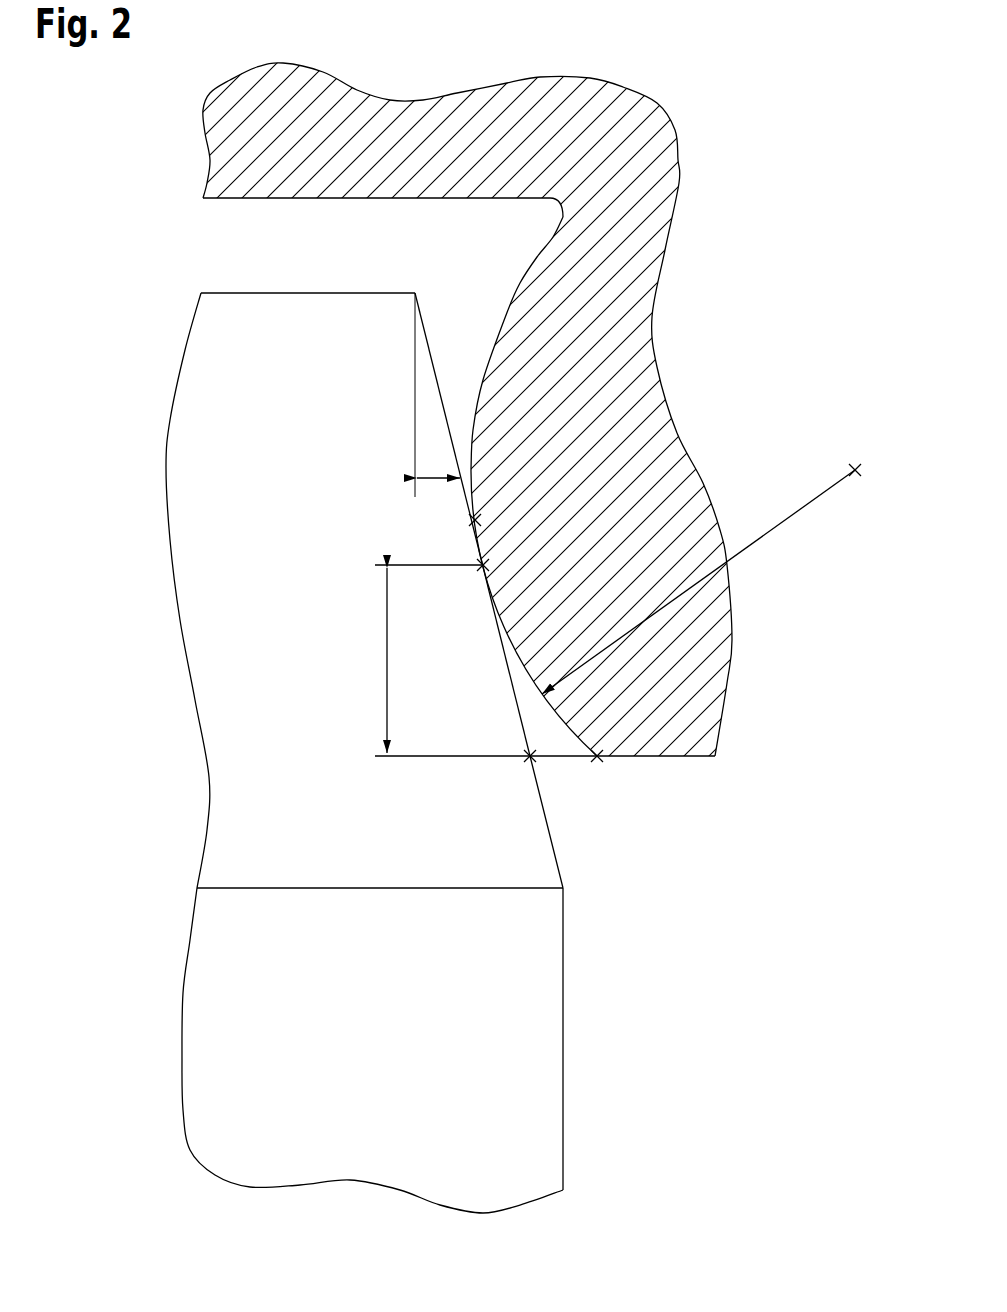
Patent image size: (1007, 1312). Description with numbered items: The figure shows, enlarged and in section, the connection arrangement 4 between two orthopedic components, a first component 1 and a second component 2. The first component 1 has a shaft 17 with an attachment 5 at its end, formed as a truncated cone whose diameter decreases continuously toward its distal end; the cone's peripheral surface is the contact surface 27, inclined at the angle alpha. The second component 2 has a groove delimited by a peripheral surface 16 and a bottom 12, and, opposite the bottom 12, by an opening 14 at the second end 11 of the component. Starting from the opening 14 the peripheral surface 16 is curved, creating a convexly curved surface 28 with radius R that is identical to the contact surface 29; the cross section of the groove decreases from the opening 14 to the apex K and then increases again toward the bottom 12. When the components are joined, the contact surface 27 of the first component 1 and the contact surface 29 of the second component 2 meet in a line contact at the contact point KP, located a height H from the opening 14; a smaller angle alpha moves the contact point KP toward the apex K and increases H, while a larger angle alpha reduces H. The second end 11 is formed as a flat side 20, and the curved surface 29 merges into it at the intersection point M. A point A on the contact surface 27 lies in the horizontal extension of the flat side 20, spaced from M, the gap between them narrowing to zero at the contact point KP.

The first component 1 is at (612, 1160).
The second component 2 is at (419, 165).
The connection arrangement 4 is at (790, 424).
The attachment 5 is at (276, 428).
The second end 11 is at (712, 763).
The bottom 12 is at (278, 232).
The opening 14 is at (561, 769).
The peripheral surface 16 is at (533, 258).
The shaft 17 is at (592, 1107).
The flat side 20 is at (691, 772).
The contact surface 27 is at (440, 390).
The convexly curved surface 28 is at (514, 296).
The contact surface 29 is at (570, 724).